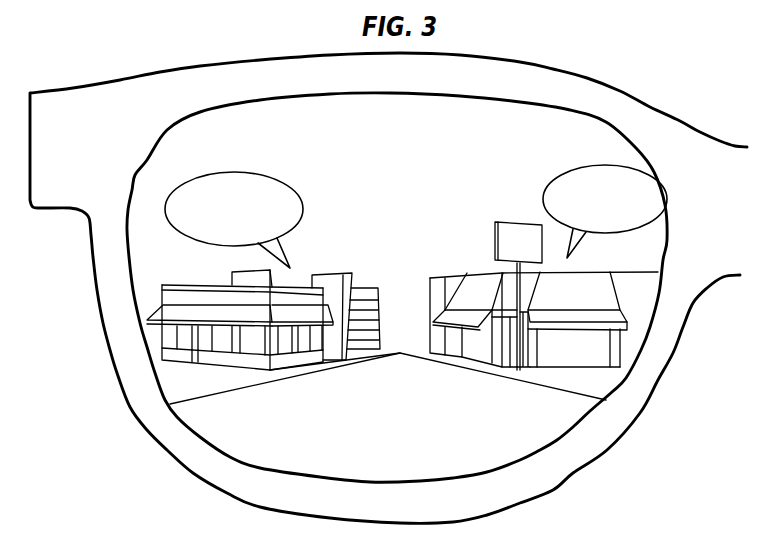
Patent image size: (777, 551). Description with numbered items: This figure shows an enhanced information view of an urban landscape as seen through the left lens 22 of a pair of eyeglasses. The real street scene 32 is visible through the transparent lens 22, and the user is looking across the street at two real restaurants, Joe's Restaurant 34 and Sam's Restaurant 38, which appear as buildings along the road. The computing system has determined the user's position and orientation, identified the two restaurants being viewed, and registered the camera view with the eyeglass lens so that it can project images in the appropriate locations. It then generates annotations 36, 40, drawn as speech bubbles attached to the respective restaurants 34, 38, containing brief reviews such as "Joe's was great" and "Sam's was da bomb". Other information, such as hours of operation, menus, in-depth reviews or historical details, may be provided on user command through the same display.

The left lens 22 is at (97, 300).
The street scene viewed through lens 32 is at (297, 432).
The Joe's Restaurant 34 is at (326, 278).
The annotation 36 is at (270, 173).
The Sam's Restaurant 38 is at (467, 285).
The annotation 40 is at (560, 175).